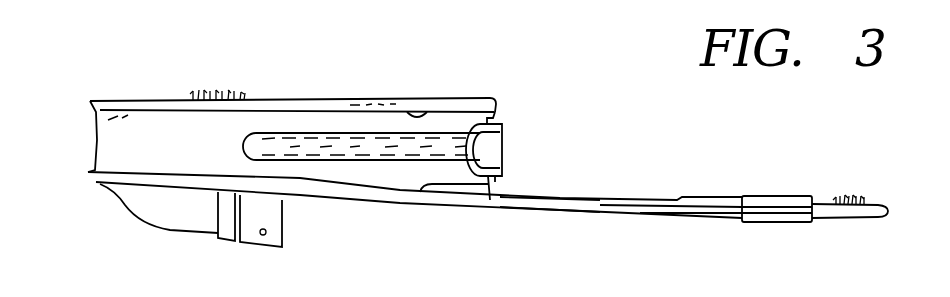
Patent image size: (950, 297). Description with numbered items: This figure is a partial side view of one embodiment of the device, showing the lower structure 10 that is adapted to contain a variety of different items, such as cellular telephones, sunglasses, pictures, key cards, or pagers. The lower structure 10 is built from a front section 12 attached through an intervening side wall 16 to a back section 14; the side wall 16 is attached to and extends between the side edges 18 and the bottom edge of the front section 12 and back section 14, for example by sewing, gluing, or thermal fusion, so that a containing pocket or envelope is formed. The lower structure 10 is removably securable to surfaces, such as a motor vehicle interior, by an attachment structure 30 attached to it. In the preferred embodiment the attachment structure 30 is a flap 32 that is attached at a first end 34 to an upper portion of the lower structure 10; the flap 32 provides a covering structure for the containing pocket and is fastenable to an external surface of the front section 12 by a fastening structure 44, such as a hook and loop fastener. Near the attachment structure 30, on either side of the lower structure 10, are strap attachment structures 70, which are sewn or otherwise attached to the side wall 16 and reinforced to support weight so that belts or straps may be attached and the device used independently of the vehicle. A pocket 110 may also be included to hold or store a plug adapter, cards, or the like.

The lower structure 10 is at (352, 214).
The front section 12 is at (340, 98).
The back section 14 is at (197, 92).
The side wall 16 is at (126, 146).
The side edges 18 is at (425, 113).
The attachment structure 30 is at (704, 224).
The flap 32 is at (628, 210).
The first end 34 is at (528, 212).
The fastening structure 44 is at (834, 198).
The strap attachment structures 70 is at (494, 152).
The pocket 110 is at (167, 215).